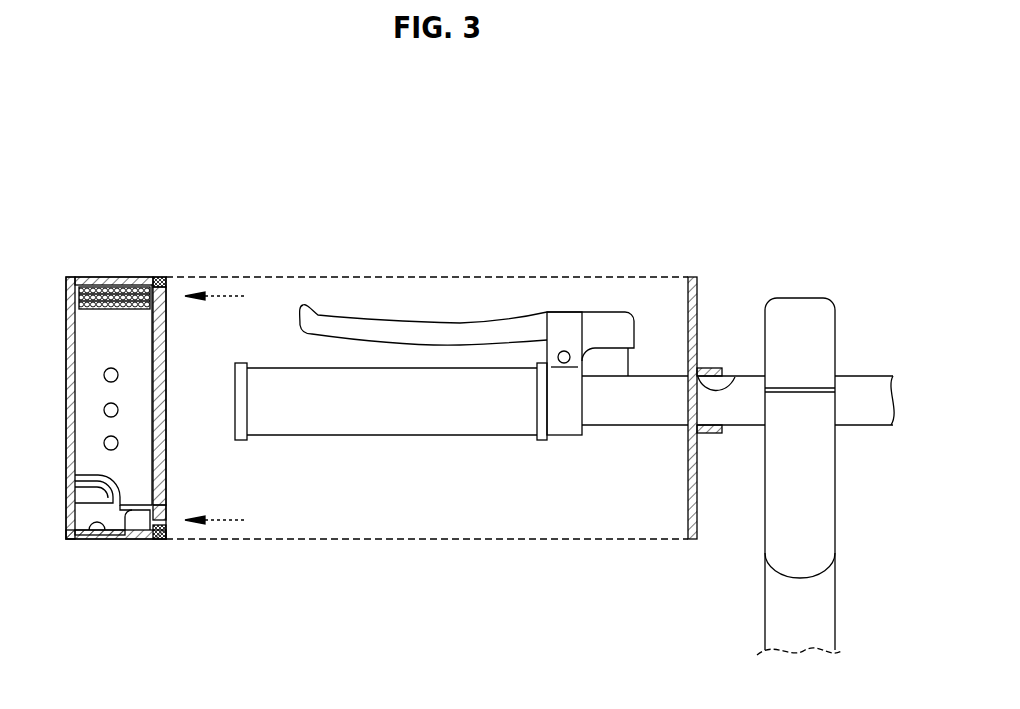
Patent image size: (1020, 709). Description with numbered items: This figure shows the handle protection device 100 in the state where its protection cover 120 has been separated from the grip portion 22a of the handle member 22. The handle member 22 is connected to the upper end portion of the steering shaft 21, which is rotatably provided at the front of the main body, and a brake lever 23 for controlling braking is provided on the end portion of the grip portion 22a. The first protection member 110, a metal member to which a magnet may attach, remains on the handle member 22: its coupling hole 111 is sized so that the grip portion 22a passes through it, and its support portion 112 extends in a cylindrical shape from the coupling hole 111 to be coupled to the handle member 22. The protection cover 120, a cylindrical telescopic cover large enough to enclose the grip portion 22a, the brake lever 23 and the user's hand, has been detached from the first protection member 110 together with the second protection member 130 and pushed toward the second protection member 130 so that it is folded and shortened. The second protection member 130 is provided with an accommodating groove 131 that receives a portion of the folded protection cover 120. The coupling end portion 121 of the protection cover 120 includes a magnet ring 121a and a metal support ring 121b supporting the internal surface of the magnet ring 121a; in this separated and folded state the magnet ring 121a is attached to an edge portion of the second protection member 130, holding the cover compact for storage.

The handle protection device 100 is at (110, 226).
The first protection member 110 is at (698, 269).
The coupling hole 111 is at (736, 376).
The support portion 112 is at (705, 437).
The protection cover 120 is at (130, 300).
The coupling end portion 121 is at (172, 526).
The magnet ring 121a is at (157, 541).
The metal support ring 121b is at (168, 513).
The second protection member 130 is at (88, 281).
The accommodating groove 131 is at (82, 544).
The steering shaft 21 is at (820, 611).
The handle member 22 is at (92, 494).
The grip portion 22a is at (332, 417).
The brake lever 23 is at (373, 325).